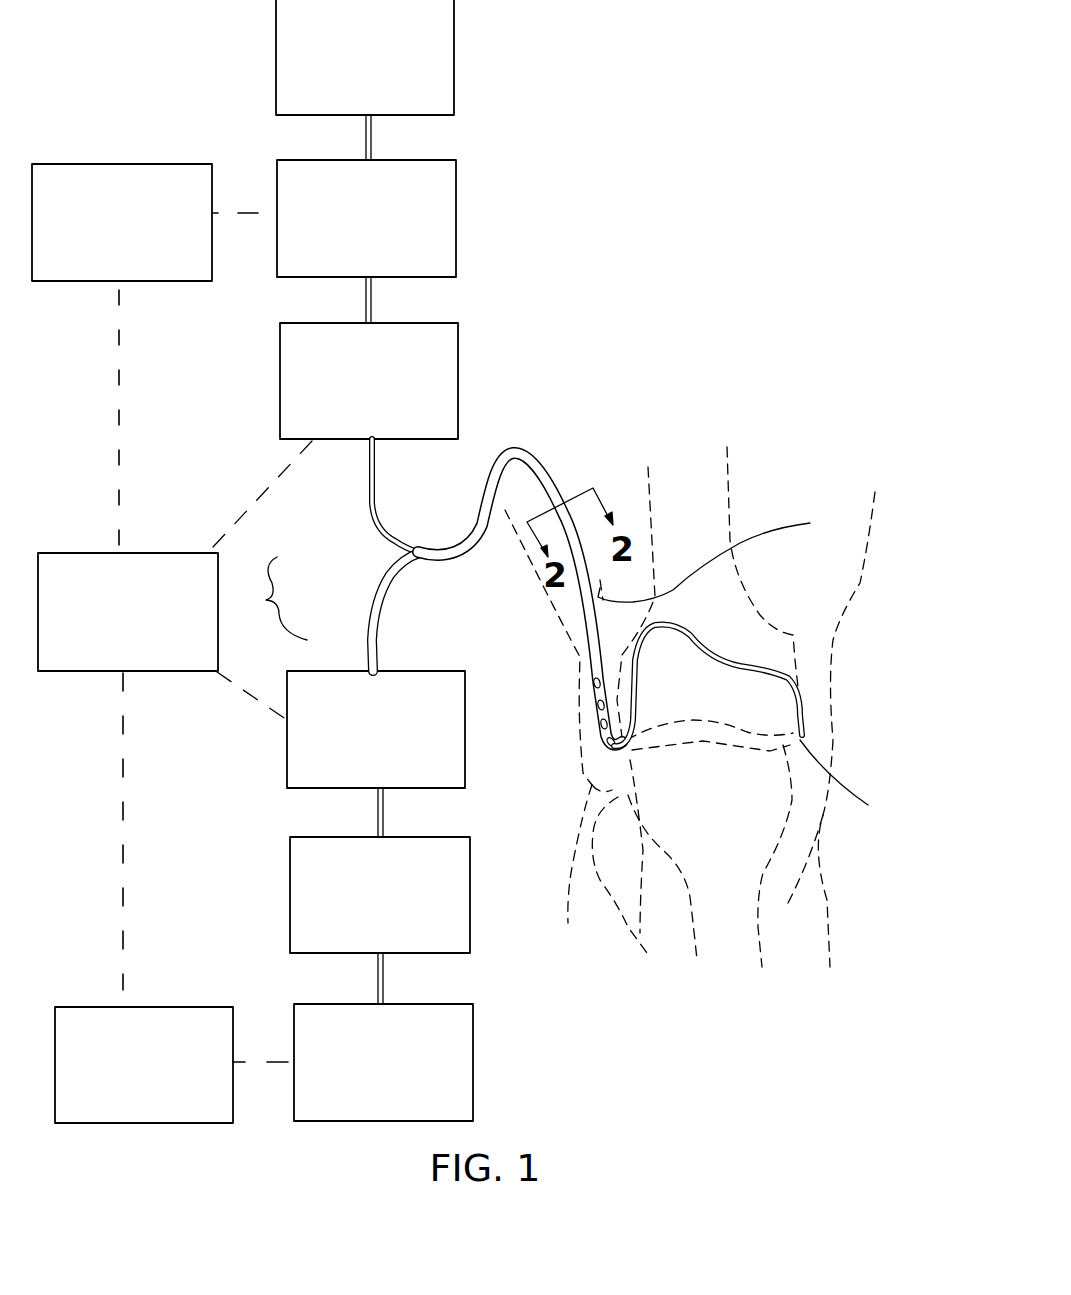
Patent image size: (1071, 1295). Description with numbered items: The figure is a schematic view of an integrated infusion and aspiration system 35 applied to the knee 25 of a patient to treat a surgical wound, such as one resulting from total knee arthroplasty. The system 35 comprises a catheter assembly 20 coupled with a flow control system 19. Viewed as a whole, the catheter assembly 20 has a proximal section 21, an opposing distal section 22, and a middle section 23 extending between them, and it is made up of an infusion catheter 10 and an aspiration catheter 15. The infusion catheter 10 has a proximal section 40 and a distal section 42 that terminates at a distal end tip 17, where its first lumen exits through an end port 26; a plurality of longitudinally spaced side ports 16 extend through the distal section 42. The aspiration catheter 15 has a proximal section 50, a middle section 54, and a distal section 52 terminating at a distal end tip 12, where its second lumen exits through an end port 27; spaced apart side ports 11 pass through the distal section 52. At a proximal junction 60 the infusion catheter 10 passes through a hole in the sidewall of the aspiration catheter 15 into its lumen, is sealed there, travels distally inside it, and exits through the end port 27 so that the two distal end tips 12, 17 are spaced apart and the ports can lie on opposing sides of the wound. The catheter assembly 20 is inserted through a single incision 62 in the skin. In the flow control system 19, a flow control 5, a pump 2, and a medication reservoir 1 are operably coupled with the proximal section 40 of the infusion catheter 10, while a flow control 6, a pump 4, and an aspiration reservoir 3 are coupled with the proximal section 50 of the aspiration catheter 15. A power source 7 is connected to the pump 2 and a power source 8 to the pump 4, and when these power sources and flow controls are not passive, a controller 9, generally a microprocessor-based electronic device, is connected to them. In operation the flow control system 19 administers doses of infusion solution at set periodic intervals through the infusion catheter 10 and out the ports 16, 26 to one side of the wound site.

The medication reservoir 1 is at (440, 97).
The pump 2 is at (442, 202).
The aspiration reservoir 3 is at (445, 948).
The pump 4 is at (455, 1040).
The flow control 5 is at (448, 340).
The flow control 6 is at (467, 745).
The power source 7 is at (160, 172).
The power source 8 is at (175, 1023).
The controller 9 is at (145, 563).
The infusion catheter 10 is at (381, 514).
The side ports 11 is at (602, 728).
The distal end tip 12 is at (616, 752).
The aspiration catheter 15 is at (387, 612).
The side ports 16 is at (803, 730).
The distal end tip 17 is at (801, 738).
The flow control system 19 is at (157, 122).
The catheter assembly 20 is at (271, 598).
The proximal section 21 is at (455, 568).
The distal section 22 is at (652, 774).
The middle section 23 is at (660, 580).
The knee 25 is at (787, 910).
The end port 26 is at (848, 781).
The end port 27 is at (625, 768).
The integrated infusion and aspiration system 35 is at (640, 128).
The proximal section 40 is at (376, 505).
The distal section 42 is at (733, 660).
The proximal section 50 is at (383, 602).
The distal section 52 is at (591, 665).
The middle section 54 is at (508, 458).
The proximal junction 60 is at (520, 584).
The incision 62 is at (719, 556).